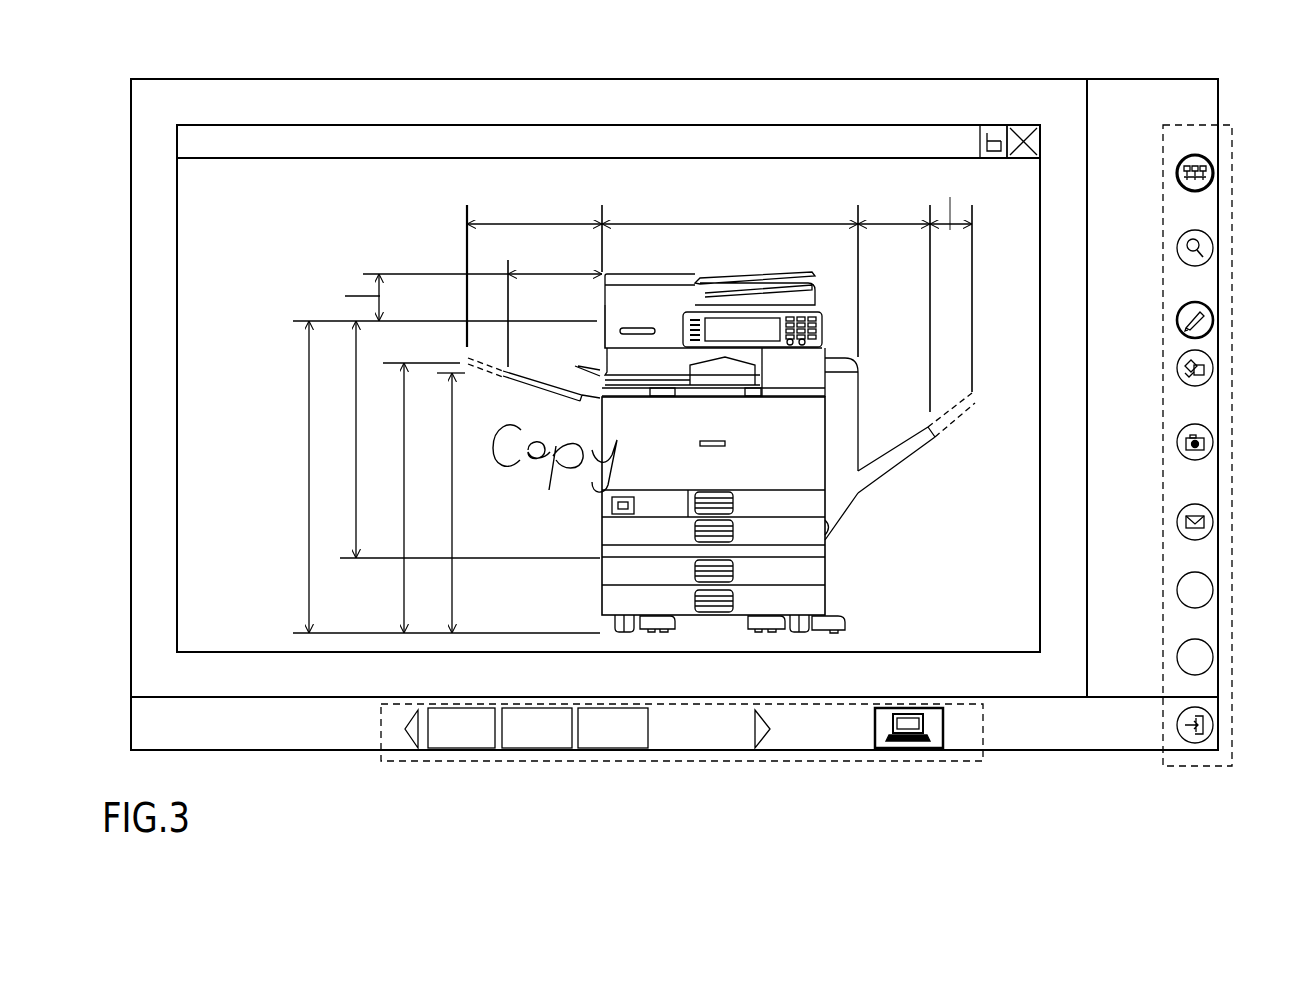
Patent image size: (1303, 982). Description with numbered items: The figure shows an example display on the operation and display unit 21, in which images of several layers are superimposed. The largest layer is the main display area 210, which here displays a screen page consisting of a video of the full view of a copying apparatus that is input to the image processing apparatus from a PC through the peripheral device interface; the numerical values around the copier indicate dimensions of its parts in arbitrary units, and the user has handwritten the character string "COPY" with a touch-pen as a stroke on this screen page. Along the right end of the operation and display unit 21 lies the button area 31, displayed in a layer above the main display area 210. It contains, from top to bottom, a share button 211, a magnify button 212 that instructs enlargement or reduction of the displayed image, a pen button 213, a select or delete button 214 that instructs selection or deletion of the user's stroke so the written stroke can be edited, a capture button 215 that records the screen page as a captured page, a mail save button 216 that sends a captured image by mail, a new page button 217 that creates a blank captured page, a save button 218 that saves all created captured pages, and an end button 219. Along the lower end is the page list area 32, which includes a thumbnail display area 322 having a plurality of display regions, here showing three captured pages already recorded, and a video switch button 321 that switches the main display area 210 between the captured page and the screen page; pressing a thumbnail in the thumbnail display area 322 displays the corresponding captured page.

The operation and display unit 21 is at (695, 21).
The main display area 210 is at (838, 90).
The share button 211 is at (1208, 160).
The magnify button 212 is at (1208, 235).
The pen button 213 is at (1208, 307).
The select or delete button 214 is at (1208, 355).
The capture button 215 is at (1208, 429).
The mail save button 216 is at (1208, 509).
The new page button 217 is at (1208, 577).
The save button 218 is at (1208, 644).
The end button 219 is at (1208, 712).
The button area 31 is at (1198, 767).
The page list area 32 is at (830, 763).
The video switch button 321 is at (943, 750).
The thumbnail display area 322 is at (778, 763).